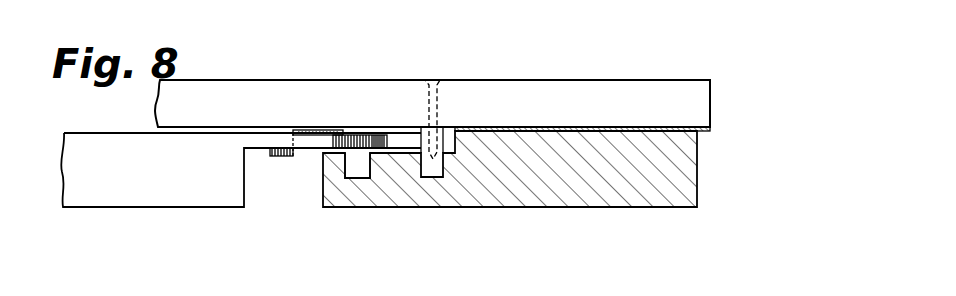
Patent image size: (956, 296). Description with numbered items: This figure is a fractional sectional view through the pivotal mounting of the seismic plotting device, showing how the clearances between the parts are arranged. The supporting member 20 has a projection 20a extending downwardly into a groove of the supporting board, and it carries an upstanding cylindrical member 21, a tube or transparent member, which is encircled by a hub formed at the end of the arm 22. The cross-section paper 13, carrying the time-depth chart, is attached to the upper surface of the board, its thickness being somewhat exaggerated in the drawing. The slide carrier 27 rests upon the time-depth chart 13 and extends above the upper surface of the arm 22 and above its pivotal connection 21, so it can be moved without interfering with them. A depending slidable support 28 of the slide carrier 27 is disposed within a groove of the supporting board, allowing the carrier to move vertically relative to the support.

The cross-section paper 13 is at (643, 131).
The supporting member 20 is at (387, 148).
The projection 20a is at (359, 172).
The cylindrical member 21 is at (315, 136).
The arm 22 is at (185, 197).
The slide carrier 27 is at (697, 113).
The slidable support 28 is at (435, 172).